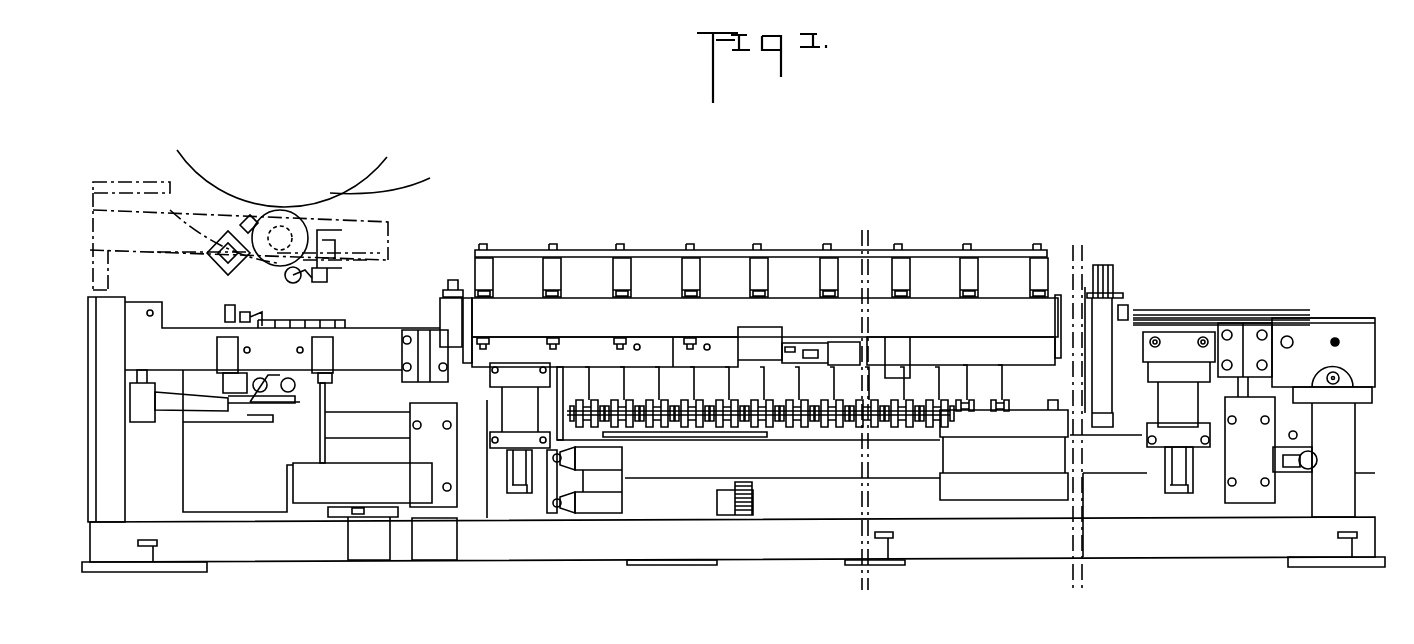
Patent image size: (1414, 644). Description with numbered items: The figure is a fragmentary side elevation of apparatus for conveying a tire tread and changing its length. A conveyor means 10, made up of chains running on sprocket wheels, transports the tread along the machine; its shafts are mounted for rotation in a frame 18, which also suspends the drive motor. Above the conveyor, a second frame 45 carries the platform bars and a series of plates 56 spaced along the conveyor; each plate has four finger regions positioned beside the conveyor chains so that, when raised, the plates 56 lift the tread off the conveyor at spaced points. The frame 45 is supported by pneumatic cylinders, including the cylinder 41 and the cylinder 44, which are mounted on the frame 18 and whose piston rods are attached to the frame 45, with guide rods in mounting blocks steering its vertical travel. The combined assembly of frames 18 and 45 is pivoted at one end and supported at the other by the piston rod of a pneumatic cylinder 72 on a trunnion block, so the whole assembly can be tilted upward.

The conveyor means 10 is at (340, 320).
The frame 18 is at (391, 324).
The pneumatic cylinder 41 is at (503, 396).
The pneumatic cylinder 44 is at (1170, 405).
The frame 45 is at (386, 443).
The plates 56 is at (664, 390).
The pneumatic cylinder 72 is at (183, 465).